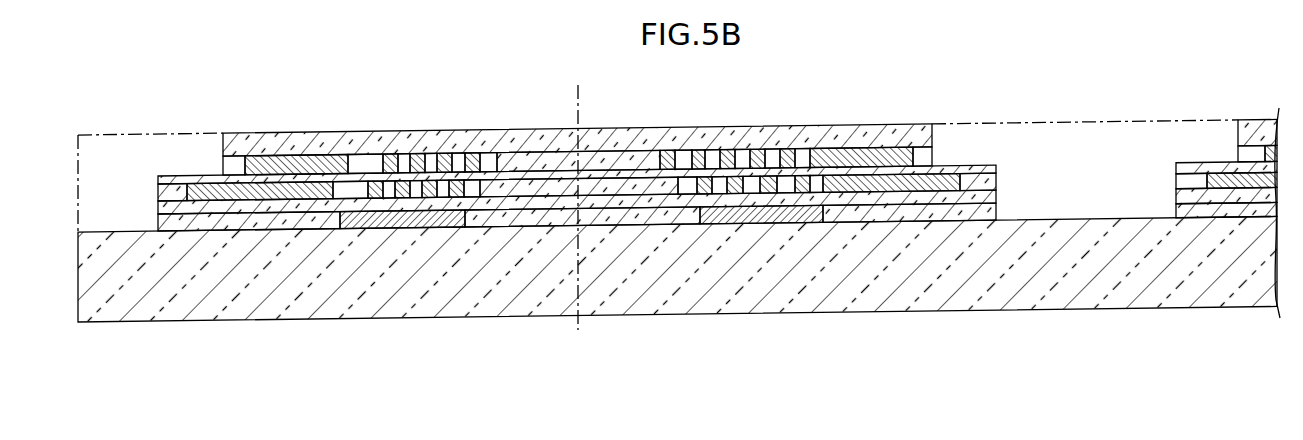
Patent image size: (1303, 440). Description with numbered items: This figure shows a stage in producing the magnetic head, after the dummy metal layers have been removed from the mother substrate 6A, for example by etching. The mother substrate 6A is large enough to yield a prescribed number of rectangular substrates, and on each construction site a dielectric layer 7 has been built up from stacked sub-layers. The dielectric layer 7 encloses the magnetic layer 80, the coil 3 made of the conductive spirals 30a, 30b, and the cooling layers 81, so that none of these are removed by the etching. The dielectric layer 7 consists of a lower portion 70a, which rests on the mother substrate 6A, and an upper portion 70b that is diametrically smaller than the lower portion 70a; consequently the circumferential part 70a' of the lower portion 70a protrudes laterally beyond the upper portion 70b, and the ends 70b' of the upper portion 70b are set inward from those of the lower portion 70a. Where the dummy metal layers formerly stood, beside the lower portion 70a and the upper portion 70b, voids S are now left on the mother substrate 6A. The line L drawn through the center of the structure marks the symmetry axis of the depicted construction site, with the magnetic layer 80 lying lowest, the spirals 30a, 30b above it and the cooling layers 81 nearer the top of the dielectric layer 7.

The coil 3 is at (595, 183).
The mother substrate 6A is at (345, 311).
The dielectric layer 7 is at (677, 129).
The conductive spiral 30a is at (660, 153).
The conductive spiral 30b is at (678, 186).
The lower portion 70a is at (717, 224).
The circumferential part 70a' is at (603, 145).
The upper portion 70b is at (750, 122).
The end portion of upper laminate 70b' is at (595, 118).
The magnetic layer 80 is at (745, 224).
The cooling layers 81 is at (835, 186).
The cutting line L is at (578, 107).
The voids S is at (128, 155).